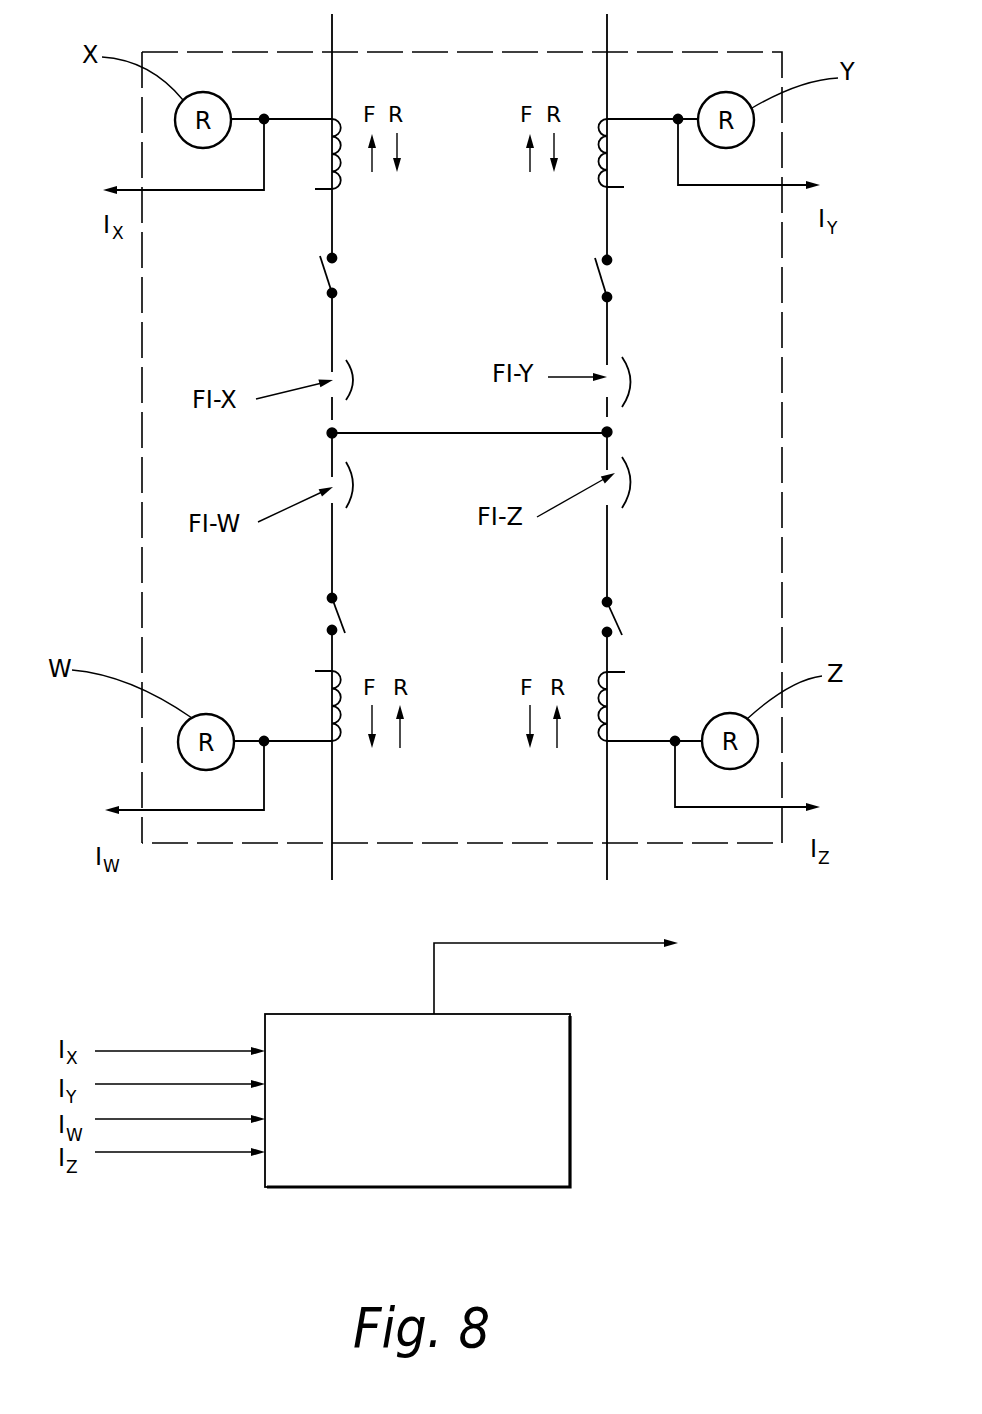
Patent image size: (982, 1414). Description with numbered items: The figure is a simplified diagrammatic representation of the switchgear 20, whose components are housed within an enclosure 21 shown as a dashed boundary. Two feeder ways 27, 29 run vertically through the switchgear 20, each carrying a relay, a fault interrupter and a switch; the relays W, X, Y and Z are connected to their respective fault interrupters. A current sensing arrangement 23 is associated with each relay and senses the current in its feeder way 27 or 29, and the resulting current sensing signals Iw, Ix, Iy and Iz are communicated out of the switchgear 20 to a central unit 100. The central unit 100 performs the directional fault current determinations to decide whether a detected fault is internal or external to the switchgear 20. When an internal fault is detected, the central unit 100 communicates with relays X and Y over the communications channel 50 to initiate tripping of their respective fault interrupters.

The switchgear 20 is at (133, 451).
The enclosure 21 is at (142, 567).
The current sensing arrangement 23 is at (608, 705).
The feeder way 27 is at (333, 35).
The feeder way 29 is at (608, 35).
The communications channel 50 is at (590, 944).
The central unit 100 is at (410, 1188).